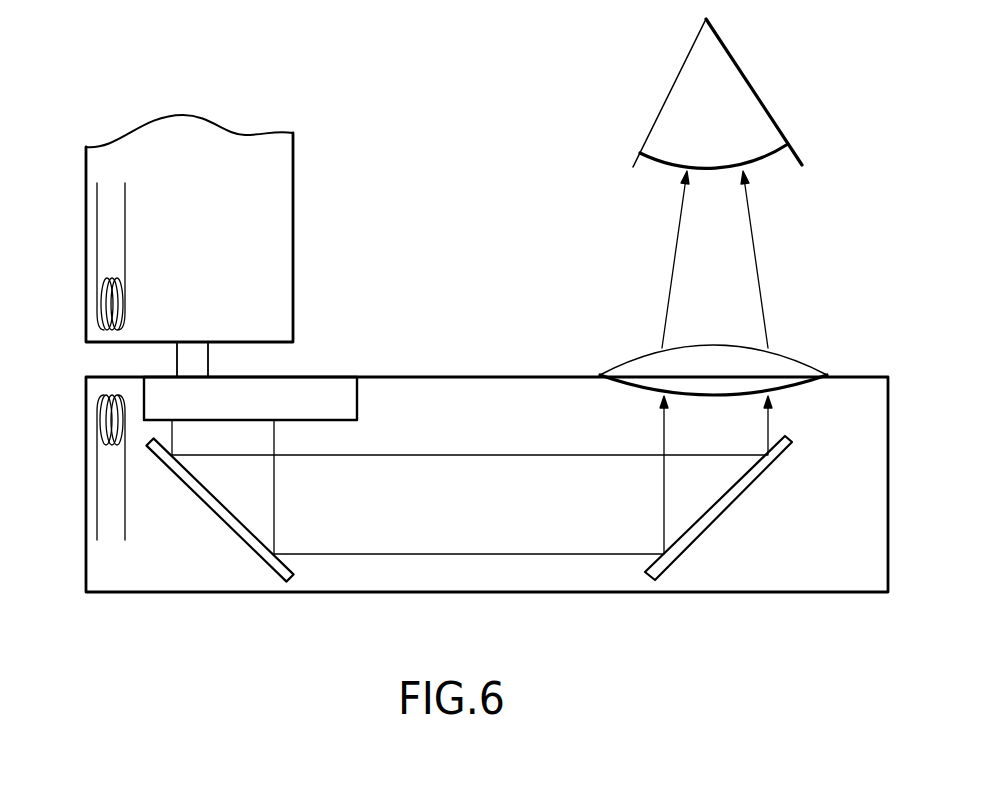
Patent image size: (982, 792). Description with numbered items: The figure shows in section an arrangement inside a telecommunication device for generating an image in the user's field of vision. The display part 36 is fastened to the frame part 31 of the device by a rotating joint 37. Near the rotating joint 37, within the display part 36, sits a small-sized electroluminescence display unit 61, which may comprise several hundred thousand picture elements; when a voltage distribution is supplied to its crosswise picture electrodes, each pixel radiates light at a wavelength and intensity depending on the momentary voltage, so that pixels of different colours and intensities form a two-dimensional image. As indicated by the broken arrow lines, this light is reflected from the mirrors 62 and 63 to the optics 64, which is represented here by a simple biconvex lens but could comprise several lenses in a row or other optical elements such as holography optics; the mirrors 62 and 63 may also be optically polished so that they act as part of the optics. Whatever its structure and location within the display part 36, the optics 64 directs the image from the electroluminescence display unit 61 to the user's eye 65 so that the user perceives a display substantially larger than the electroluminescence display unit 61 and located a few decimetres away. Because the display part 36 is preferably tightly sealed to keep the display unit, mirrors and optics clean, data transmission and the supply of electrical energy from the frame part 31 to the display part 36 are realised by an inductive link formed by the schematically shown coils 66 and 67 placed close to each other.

The frame part 31 is at (293, 175).
The display part 36 is at (582, 592).
The rotating joint 37 is at (414, 226).
The electroluminescence display unit 61 is at (305, 393).
The mirror 62 is at (252, 553).
The mirror 63 is at (712, 527).
The optics 64 is at (755, 350).
The user's eye 65 is at (728, 112).
The coil 66 is at (112, 248).
The coil 67 is at (110, 458).